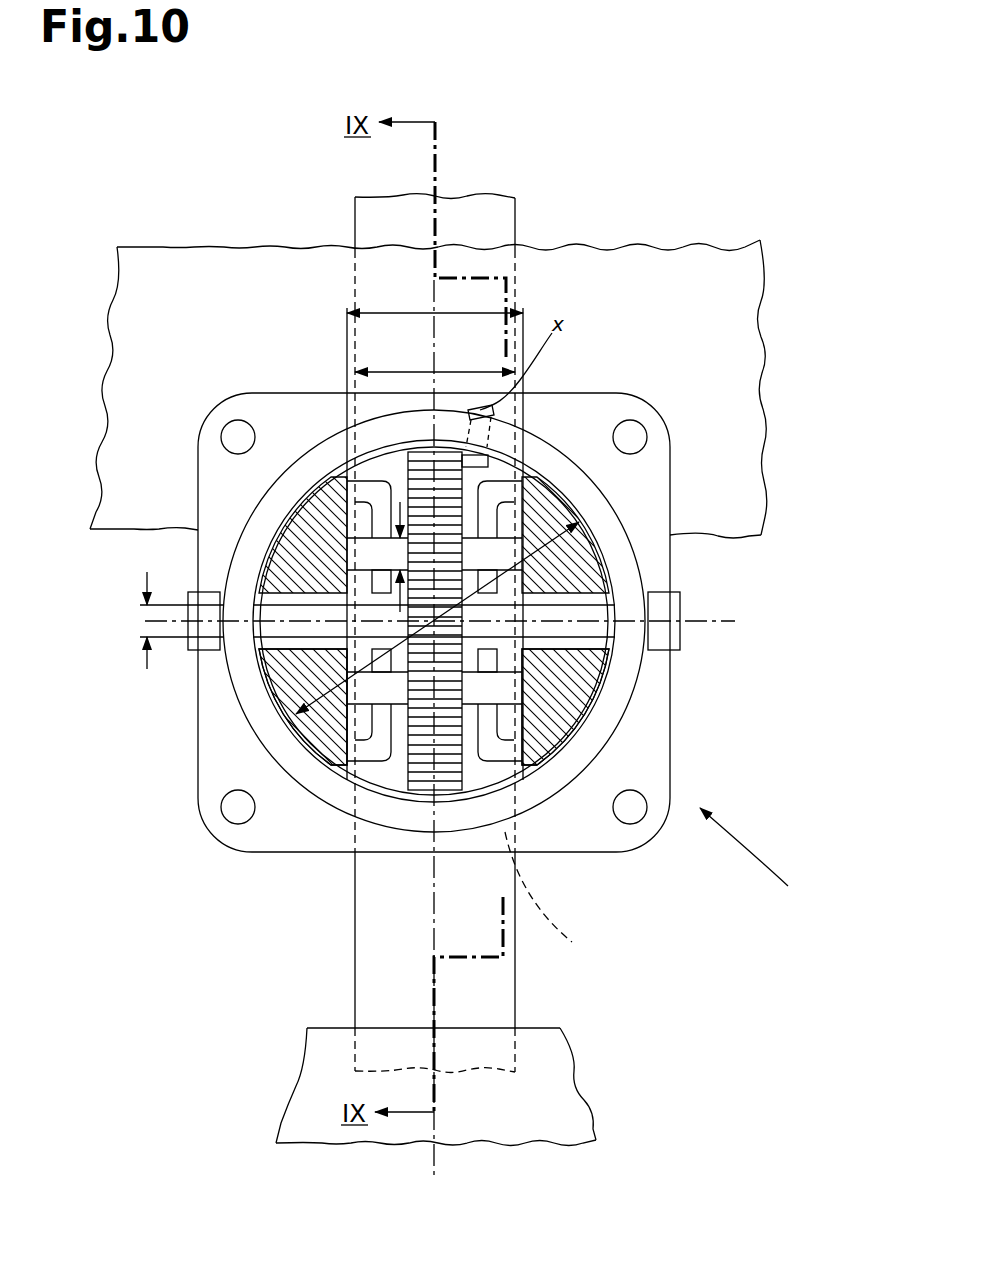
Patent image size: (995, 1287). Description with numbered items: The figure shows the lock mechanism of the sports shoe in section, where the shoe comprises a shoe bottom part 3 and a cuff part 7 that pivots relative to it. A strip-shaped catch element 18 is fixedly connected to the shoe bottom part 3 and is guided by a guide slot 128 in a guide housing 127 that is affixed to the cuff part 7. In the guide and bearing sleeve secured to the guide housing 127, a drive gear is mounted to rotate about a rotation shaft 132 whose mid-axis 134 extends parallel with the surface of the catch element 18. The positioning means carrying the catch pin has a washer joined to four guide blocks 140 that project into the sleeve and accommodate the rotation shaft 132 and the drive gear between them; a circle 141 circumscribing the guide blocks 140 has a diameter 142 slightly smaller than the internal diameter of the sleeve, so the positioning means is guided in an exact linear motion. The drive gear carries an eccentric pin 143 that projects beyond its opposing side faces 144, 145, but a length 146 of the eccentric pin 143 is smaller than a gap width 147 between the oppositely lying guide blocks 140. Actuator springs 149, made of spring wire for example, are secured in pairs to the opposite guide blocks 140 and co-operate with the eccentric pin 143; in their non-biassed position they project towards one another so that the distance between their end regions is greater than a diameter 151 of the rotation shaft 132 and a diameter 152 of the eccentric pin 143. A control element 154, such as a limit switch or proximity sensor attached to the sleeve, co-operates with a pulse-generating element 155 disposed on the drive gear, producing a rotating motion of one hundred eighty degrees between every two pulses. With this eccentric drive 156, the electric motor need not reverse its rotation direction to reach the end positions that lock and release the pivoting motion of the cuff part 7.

The shoe bottom part 3 is at (570, 1117).
The cuff part 7 is at (735, 300).
The catch element 18 is at (372, 968).
The guide housing 127 is at (598, 838).
The guide slot 128 is at (556, 900).
The rotation shaft 132 is at (612, 610).
The mid-axis 134 is at (735, 624).
The guide blocks 140 is at (336, 750).
The circle 141 is at (577, 506).
The diameter 142 is at (323, 693).
The eccentric pin 143 is at (368, 559).
The side face 144 is at (398, 768).
The side face 145 is at (470, 768).
The length 146 is at (463, 368).
The gap width 147 is at (457, 312).
The actuator springs 149 is at (296, 714).
The diameter 151 is at (143, 620).
The diameter 152 is at (398, 550).
The control element 154 is at (492, 405).
The pulse-generating element 155 is at (482, 460).
The eccentric drive 156 is at (761, 853).